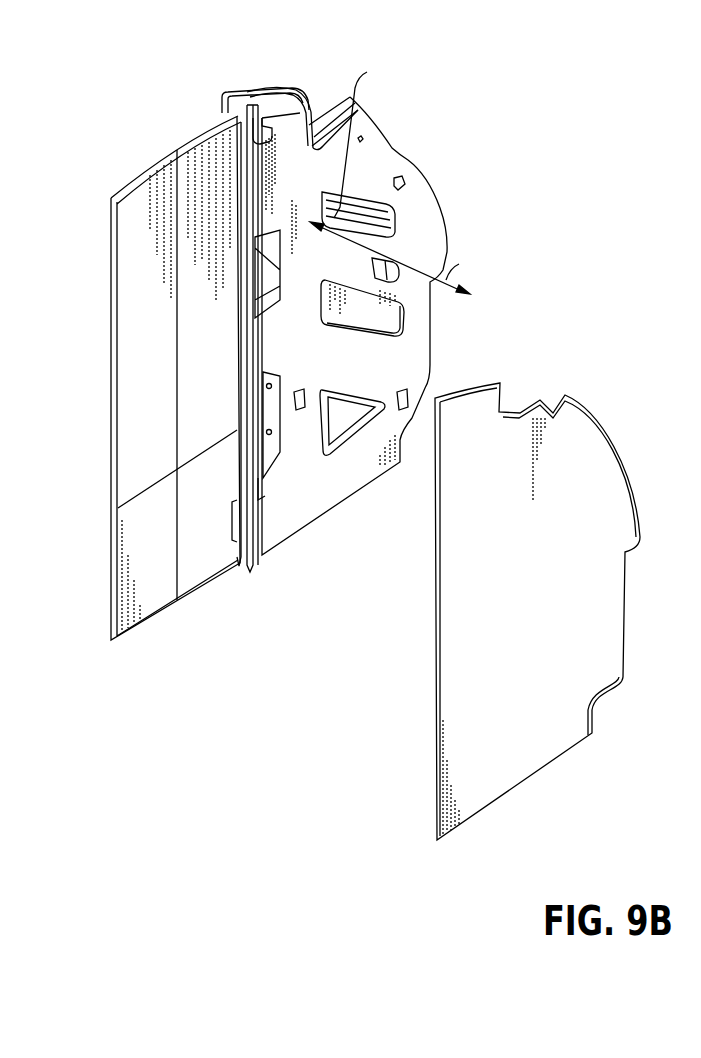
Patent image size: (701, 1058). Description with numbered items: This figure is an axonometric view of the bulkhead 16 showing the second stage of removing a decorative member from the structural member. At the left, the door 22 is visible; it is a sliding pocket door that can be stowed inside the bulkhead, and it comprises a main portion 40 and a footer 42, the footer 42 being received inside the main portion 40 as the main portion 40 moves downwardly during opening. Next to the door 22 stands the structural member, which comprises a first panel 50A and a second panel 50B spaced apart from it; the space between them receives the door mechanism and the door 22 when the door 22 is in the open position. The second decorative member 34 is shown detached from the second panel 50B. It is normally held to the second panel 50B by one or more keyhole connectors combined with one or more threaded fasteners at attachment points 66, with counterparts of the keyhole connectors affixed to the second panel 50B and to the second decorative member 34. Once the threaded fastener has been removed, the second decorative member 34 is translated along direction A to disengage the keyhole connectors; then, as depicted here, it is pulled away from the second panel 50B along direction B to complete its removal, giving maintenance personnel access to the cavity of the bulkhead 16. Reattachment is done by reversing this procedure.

The bulkhead 16 is at (490, 205).
The door 22 is at (147, 347).
The second decorative member 34 is at (545, 602).
The main portion 40 is at (225, 268).
The footer 42 is at (224, 512).
The first panel 50A is at (242, 101).
The second panel 50B is at (400, 153).
The attachment points 66 is at (400, 181).
The direction A is at (390, 176).
The direction B is at (465, 269).